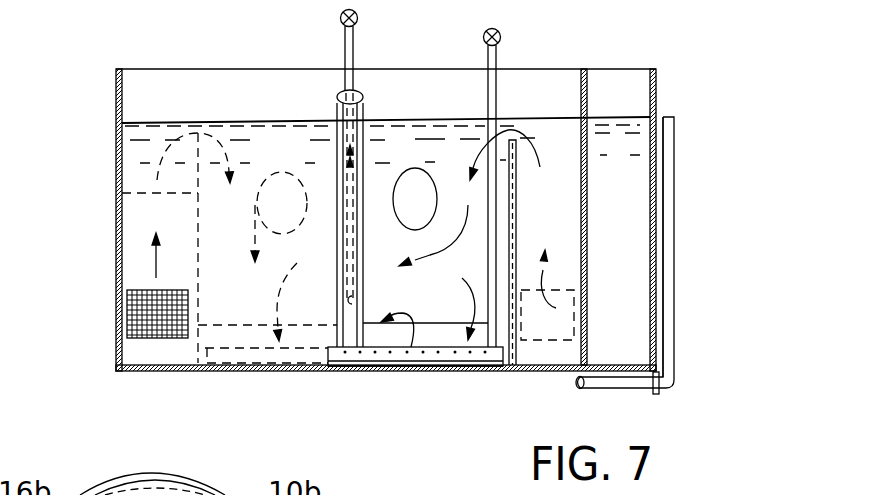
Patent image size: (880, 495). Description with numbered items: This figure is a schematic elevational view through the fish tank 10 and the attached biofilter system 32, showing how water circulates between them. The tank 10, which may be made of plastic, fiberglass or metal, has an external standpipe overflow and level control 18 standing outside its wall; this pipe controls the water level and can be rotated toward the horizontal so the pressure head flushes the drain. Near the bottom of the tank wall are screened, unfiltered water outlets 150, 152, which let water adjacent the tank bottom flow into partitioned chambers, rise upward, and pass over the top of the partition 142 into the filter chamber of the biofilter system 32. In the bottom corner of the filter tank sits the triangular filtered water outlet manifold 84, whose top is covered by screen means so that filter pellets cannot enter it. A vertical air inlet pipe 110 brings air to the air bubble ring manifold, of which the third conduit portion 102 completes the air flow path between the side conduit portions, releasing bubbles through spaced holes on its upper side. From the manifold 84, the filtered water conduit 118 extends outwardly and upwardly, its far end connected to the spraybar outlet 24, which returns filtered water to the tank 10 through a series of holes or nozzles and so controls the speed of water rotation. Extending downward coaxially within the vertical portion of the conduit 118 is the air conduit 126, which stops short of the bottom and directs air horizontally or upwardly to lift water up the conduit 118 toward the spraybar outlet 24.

The tank 10 is at (657, 88).
The external standpipe overflow and level control 18 is at (675, 143).
The spraybar outlet 24 is at (339, 92).
The biofilter system 32 is at (600, 92).
The filtered water outlet manifold 84 is at (413, 338).
The third conduit portion 102 is at (457, 362).
The vertical air inlet pipe 110 is at (496, 58).
The filtered water conduit 118 is at (338, 305).
The air conduit 126 is at (356, 50).
The partition 142 is at (513, 222).
The screened unfiltered water outlet 150 is at (127, 312).
The screened unfiltered water outlet 152 is at (574, 330).